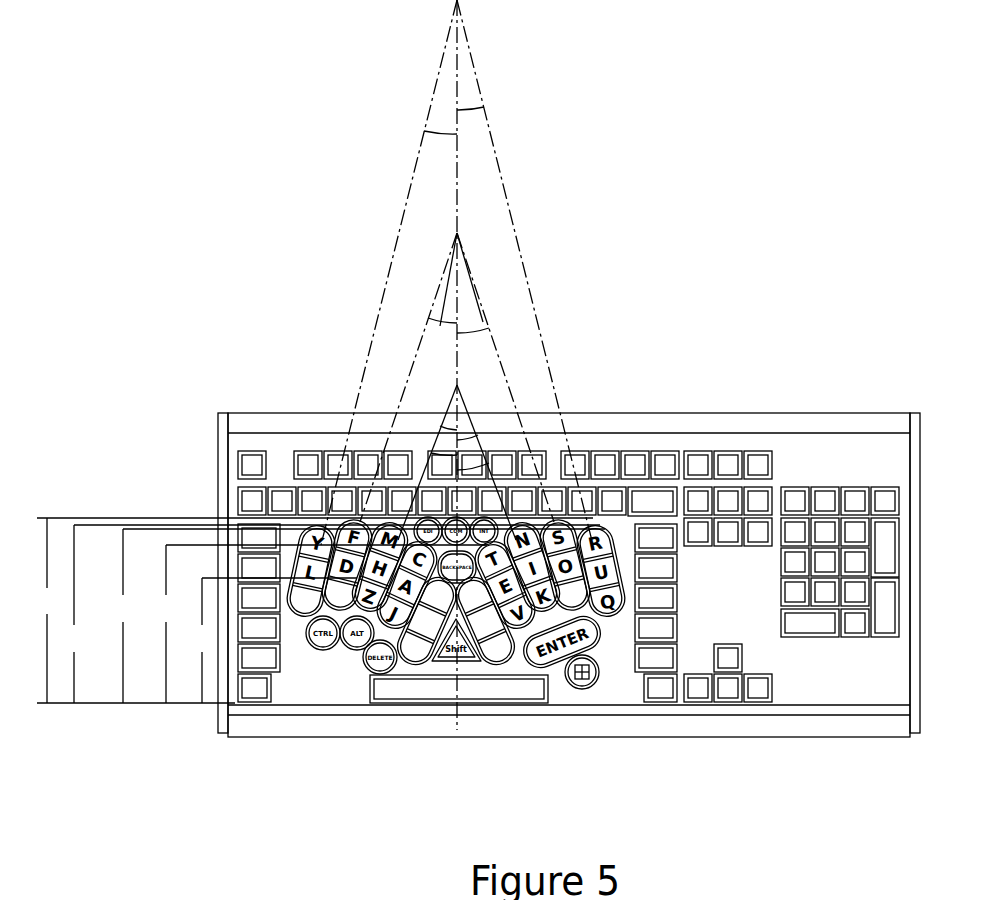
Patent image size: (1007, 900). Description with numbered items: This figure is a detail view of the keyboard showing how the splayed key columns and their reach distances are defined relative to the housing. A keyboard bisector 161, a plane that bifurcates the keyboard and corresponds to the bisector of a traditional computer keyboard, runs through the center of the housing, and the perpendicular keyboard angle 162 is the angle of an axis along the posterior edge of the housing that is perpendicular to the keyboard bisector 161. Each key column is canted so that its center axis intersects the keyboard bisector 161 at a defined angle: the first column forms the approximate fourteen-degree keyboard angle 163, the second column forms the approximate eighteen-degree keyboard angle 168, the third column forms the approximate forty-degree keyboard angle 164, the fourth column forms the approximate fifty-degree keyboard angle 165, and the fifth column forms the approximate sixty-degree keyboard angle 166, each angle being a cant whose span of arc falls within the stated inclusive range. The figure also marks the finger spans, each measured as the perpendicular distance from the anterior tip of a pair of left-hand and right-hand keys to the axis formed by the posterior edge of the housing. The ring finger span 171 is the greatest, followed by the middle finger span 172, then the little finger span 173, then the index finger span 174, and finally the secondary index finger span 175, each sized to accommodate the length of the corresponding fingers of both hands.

The keyboard bisector 161 is at (459, 722).
The perpendicular keyboard angle 162 is at (461, 690).
The approximate fourteen-degree keyboard angle 163 is at (450, 135).
The approximate forty-degree keyboard angle 164 is at (460, 384).
The approximate fifty-degree keyboard angle 165 is at (458, 454).
The approximate sixty-degree keyboard angle 166 is at (446, 627).
The approximate eighteen-degree keyboard angle 168 is at (459, 275).
The ring finger span 171 is at (312, 610).
The middle finger span 172 is at (329, 614).
The little finger span 173 is at (356, 616).
The index finger span 174 is at (318, 624).
The secondary index finger span 175 is at (271, 640).